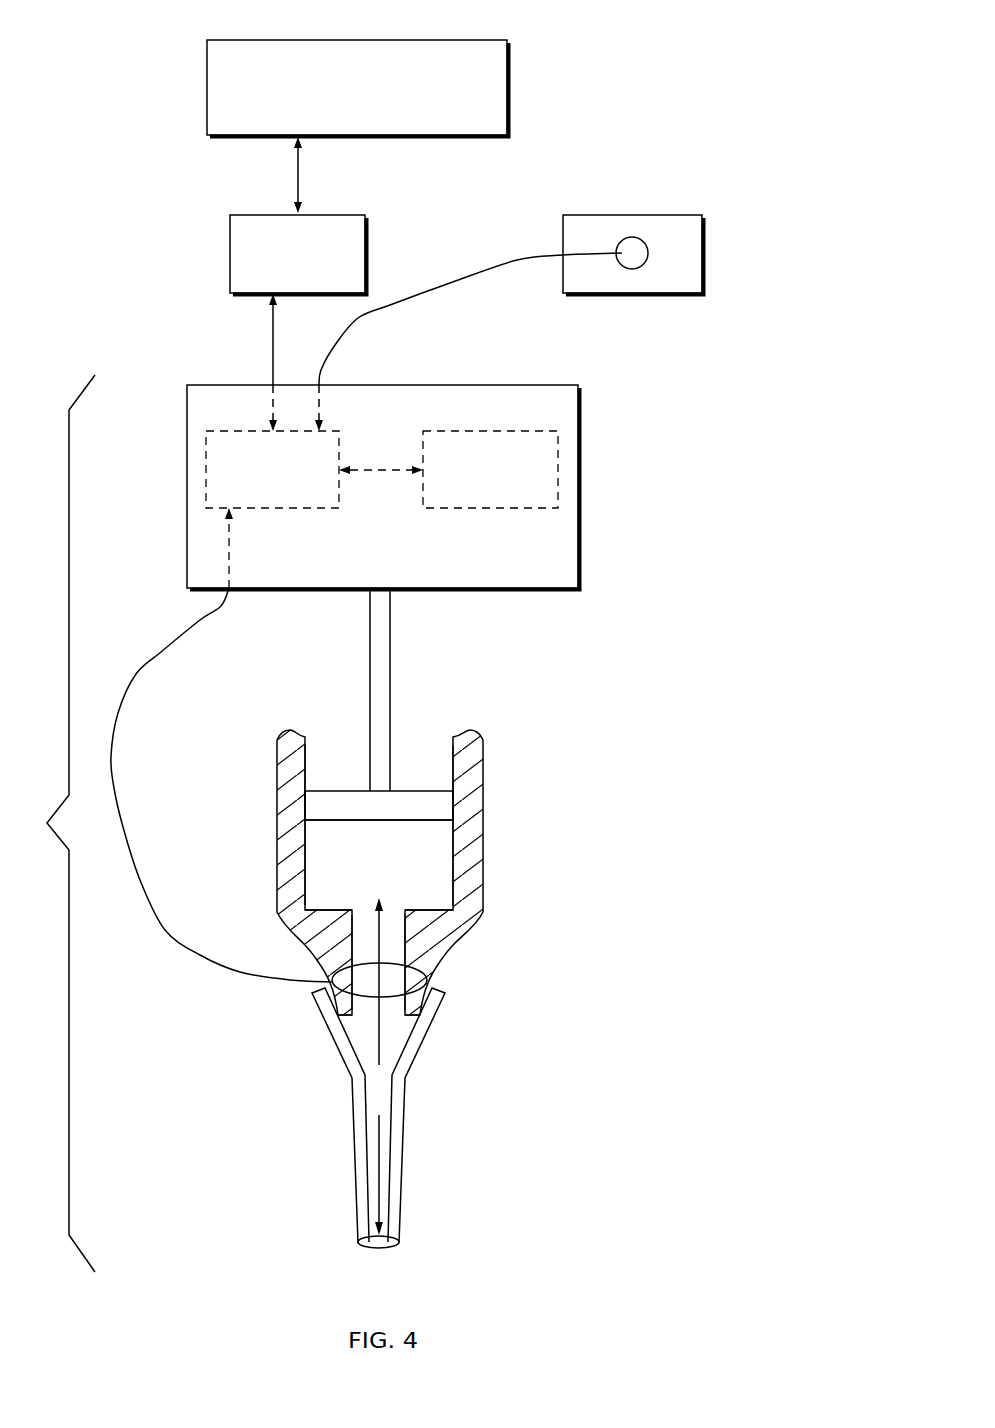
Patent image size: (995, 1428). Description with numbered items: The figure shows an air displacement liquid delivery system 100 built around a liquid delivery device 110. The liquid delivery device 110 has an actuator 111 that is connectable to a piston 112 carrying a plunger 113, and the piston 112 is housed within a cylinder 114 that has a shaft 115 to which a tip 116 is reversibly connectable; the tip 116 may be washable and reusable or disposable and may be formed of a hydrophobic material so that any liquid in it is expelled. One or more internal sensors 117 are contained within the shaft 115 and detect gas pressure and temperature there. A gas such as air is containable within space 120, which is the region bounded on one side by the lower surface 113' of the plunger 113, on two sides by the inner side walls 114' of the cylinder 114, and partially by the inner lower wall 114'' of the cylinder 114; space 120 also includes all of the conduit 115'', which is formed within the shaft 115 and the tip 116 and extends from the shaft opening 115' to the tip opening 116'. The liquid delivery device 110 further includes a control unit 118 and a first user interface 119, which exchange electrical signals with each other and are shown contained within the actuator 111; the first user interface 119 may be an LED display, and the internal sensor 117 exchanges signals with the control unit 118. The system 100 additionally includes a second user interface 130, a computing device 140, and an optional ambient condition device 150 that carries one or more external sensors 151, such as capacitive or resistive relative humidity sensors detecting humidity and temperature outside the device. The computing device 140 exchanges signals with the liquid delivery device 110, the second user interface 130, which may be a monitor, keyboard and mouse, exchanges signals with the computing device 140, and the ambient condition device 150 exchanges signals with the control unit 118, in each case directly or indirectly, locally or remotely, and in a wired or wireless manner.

The air displacement liquid delivery system 100 is at (64, 26).
The liquid delivery device 110 is at (49, 823).
The actuator 111 is at (578, 480).
The piston 112 is at (390, 663).
The plunger 113 is at (451, 803).
The lower surface 113' is at (454, 825).
The cylinder 114 is at (337, 872).
The inner side walls 114' is at (408, 788).
The inner lower wall 114'' is at (315, 879).
The shaft 115 is at (312, 962).
The shaft opening 115' is at (473, 948).
The conduit 115'' is at (433, 1158).
The tip 116 is at (401, 1115).
The tip opening 116' is at (416, 1257).
The internal sensor 117 is at (437, 950).
The control unit 118 is at (290, 481).
The first user interface 119 is at (514, 481).
The space 120 is at (398, 867).
The second user interface 130 is at (378, 100).
The computing device 140 is at (314, 268).
The ambient condition device 150 is at (703, 257).
The external sensor 151 is at (637, 248).